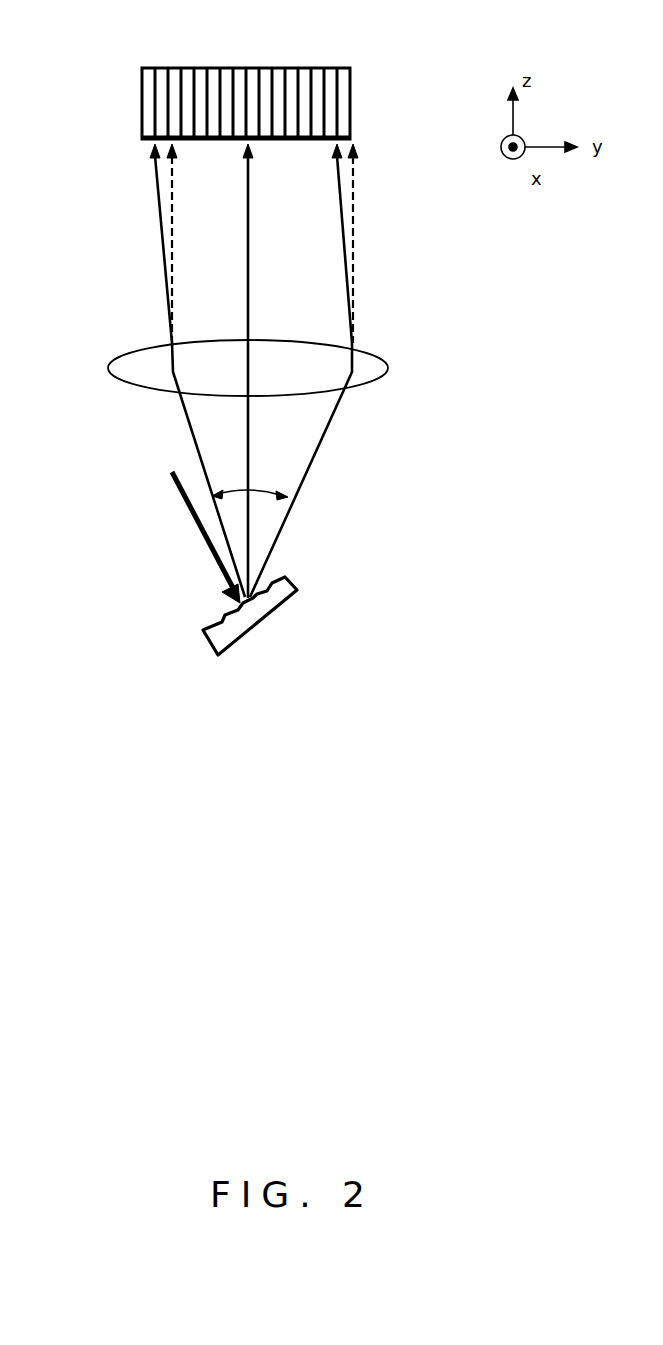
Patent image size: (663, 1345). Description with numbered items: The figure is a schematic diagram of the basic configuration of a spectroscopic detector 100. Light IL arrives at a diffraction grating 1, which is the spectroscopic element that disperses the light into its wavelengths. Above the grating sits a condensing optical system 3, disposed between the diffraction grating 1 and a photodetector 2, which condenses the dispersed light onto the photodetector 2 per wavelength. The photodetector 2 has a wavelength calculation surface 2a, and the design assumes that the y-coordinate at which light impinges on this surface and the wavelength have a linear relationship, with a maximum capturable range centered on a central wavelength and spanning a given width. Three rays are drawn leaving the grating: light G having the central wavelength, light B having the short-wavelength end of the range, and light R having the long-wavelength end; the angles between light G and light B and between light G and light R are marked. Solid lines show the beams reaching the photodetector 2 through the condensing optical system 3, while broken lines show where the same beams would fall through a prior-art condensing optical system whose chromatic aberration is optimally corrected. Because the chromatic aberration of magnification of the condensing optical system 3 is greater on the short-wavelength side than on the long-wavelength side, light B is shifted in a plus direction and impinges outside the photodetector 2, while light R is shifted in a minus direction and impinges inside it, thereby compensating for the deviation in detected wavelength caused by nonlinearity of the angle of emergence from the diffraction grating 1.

The spectroscopic detector 100 is at (453, 45).
The photodetector 2 is at (350, 100).
The wavelength calculation surface 2a is at (147, 139).
The condensing optical system 3 is at (370, 380).
The light B is at (160, 247).
The light G is at (247, 290).
The light R is at (340, 187).
The light IL is at (192, 517).
The diffraction grating 1 is at (253, 622).